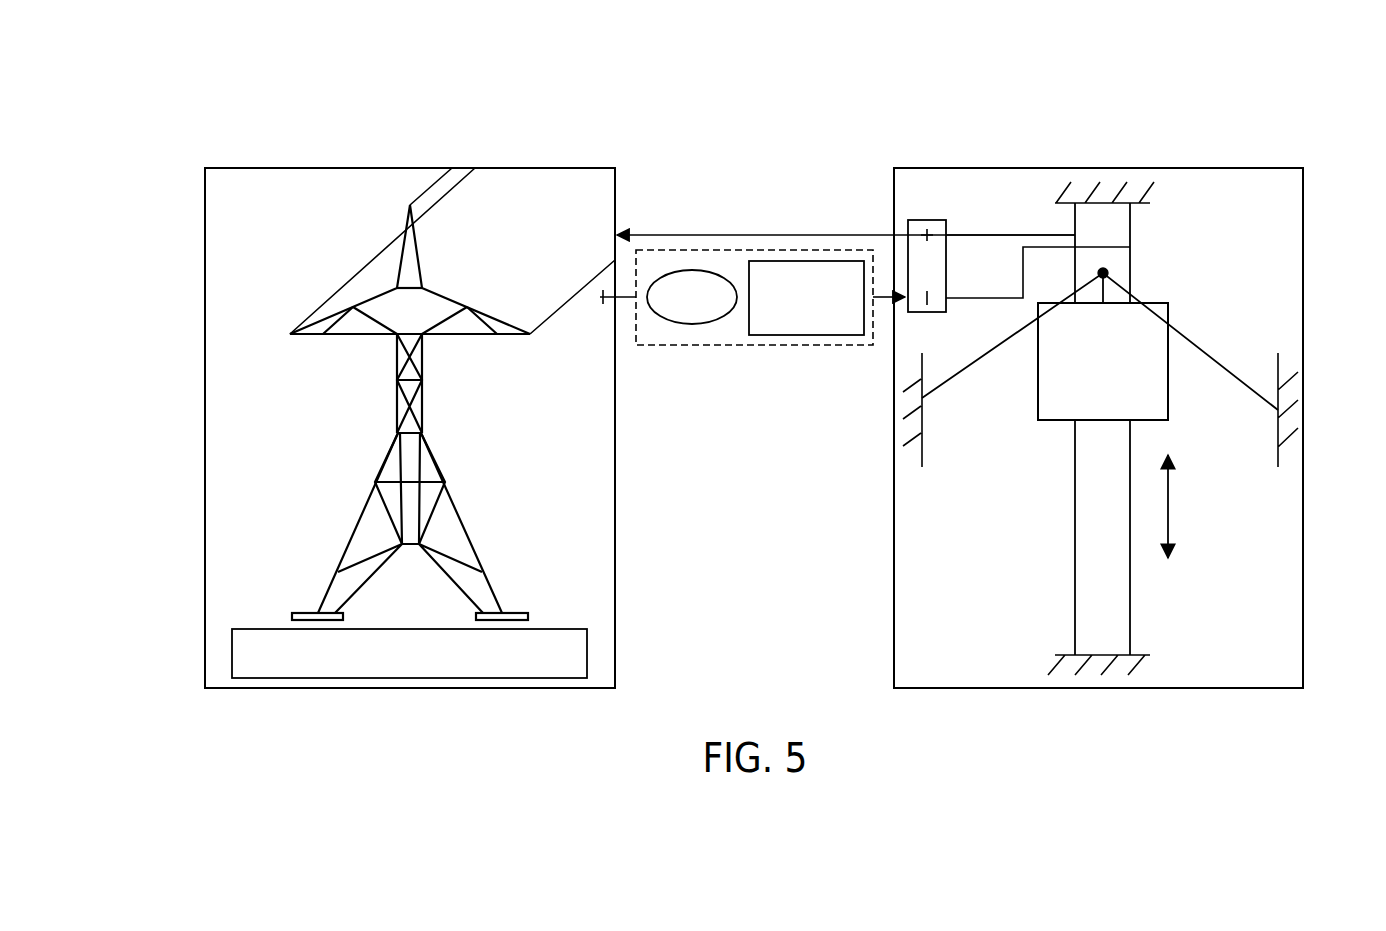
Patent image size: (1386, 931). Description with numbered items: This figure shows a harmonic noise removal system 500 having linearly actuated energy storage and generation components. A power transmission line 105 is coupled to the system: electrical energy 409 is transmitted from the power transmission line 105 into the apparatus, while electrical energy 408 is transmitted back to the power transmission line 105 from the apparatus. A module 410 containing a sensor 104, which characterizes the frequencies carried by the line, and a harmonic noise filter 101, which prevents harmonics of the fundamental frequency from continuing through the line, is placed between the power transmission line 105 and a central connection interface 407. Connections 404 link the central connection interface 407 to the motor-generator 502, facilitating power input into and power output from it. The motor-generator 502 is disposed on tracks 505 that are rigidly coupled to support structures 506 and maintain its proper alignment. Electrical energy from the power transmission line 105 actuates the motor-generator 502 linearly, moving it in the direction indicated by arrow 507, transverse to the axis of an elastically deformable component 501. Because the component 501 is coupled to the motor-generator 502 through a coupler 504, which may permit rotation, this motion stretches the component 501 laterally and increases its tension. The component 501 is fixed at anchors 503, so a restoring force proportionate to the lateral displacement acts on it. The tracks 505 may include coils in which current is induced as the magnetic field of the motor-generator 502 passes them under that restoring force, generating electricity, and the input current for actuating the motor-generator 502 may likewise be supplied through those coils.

The harmonic noise removal system 500 is at (1222, 96).
The power transmission line 105 is at (572, 168).
The electrical energy transmitted to the power transmission line 408 is at (745, 232).
The electrical energy transmitted from the power transmission line 409 is at (620, 298).
The sensor and harmonic filter module 410 is at (765, 347).
The sensor 104 is at (692, 325).
The harmonic noise filter 101 is at (828, 335).
The central connection interface 407 is at (935, 220).
The connections 404 is at (965, 235).
The support structures 506 is at (1110, 203).
The tracks 505 is at (1073, 490).
The coupler 504 is at (1107, 270).
The motor-generator 502 is at (1160, 300).
The elastically deformable component 501 is at (973, 362).
The anchors 503 is at (920, 424).
The arrow 507 is at (1170, 525).